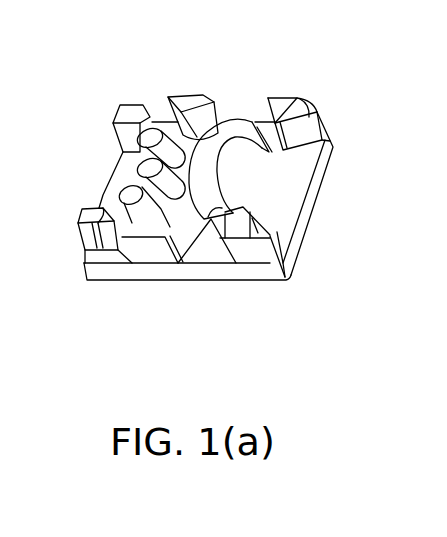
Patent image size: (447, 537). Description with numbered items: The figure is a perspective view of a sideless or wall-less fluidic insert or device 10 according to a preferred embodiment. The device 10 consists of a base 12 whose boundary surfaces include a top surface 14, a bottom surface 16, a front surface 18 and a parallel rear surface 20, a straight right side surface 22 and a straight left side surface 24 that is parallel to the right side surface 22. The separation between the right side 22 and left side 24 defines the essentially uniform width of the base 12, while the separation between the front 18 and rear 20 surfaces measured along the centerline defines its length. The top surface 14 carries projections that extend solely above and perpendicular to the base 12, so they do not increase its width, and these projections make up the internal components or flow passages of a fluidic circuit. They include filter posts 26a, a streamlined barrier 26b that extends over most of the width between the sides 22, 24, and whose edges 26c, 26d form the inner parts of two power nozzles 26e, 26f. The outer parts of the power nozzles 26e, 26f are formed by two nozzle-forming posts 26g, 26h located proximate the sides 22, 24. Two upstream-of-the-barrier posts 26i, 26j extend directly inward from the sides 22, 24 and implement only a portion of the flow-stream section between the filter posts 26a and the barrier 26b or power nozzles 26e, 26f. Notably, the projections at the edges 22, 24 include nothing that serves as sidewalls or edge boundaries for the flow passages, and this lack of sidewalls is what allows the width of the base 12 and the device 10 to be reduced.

The fluidic insert or device 10 is at (97, 107).
The base 12 is at (80, 272).
The top surface 14 is at (162, 120).
The bottom surface 16 is at (153, 280).
The front surface 18 is at (297, 253).
The rear surface 20 is at (113, 172).
The right side surface 22 is at (200, 273).
The left side surface 24 is at (260, 120).
The filter posts 26a is at (128, 196).
The streamlined barrier 26b is at (234, 118).
The barrier edge 26c is at (202, 268).
The barrier edge 26d is at (245, 118).
The power nozzle 26e is at (213, 237).
The power nozzle 26f is at (290, 100).
The nozzle-forming post 26g is at (253, 222).
The nozzle-forming post 26h is at (300, 97).
The upstream-of-the-barrier post 26i is at (147, 248).
The upstream-of-the-barrier post 26j is at (191, 99).